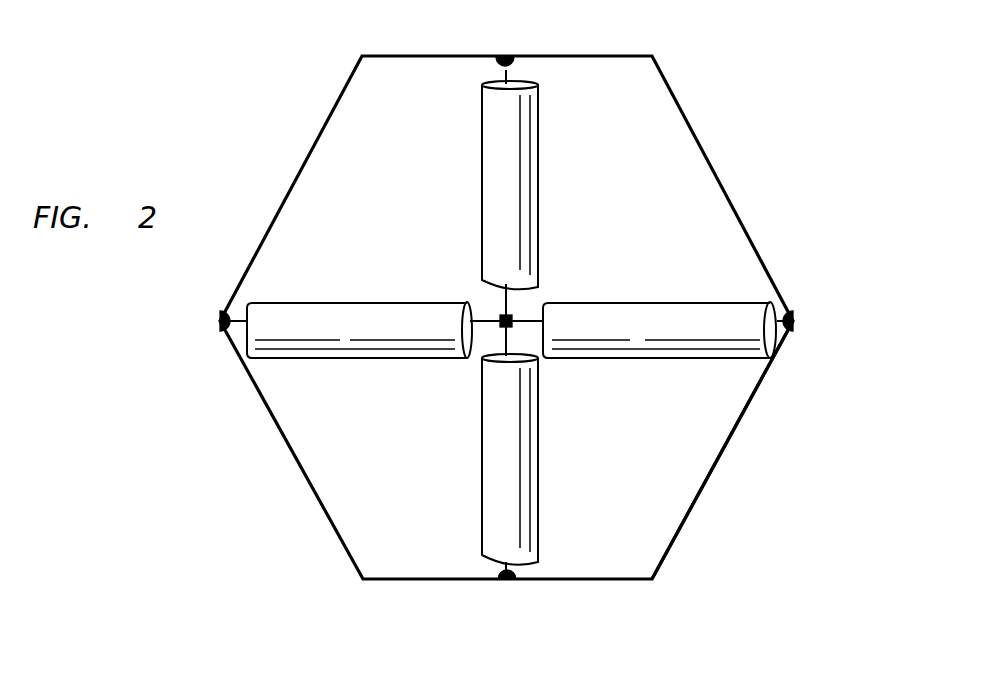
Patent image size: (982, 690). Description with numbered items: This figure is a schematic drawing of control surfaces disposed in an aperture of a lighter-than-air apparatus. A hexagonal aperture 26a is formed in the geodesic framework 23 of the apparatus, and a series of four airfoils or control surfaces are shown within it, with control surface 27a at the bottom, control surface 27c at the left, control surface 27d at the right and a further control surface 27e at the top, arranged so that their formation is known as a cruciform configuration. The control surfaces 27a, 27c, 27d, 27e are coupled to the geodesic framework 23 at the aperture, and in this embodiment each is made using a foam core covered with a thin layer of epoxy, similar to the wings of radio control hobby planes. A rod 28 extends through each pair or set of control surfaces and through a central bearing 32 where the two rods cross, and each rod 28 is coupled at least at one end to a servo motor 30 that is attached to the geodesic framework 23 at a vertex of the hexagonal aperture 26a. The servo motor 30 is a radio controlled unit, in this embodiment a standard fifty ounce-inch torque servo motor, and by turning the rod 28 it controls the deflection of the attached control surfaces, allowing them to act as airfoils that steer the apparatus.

The geodesic framework 23 is at (321, 128).
The hexagonal aperture 26a is at (670, 472).
The control surface 27a is at (482, 448).
The control surface 27c is at (325, 303).
The control surface 27d is at (712, 303).
The roller 27e is at (482, 204).
The rod 28 is at (506, 320).
The servo motor 30 is at (506, 56).
The bearing 32 is at (513, 316).